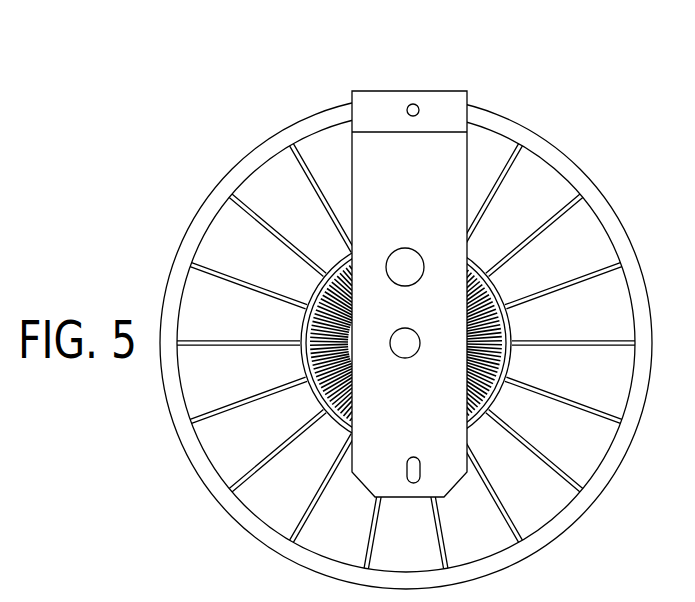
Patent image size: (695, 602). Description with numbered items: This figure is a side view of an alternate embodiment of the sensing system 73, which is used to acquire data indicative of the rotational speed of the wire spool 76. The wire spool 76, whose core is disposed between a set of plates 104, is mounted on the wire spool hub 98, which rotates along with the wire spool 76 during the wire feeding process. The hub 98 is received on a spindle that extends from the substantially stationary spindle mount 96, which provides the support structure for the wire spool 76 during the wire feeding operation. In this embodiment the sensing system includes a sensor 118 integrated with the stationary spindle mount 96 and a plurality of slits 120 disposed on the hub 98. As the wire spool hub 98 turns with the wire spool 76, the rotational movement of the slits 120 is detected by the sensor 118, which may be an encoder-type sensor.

The wire spool 76 is at (245, 114).
The spindle mount 96 is at (378, 100).
The plates 104 is at (500, 128).
The sensing system 73 is at (359, 206).
The sensor 118 is at (404, 262).
The slits 120 is at (482, 264).
The wire spool hub 98 is at (492, 393).